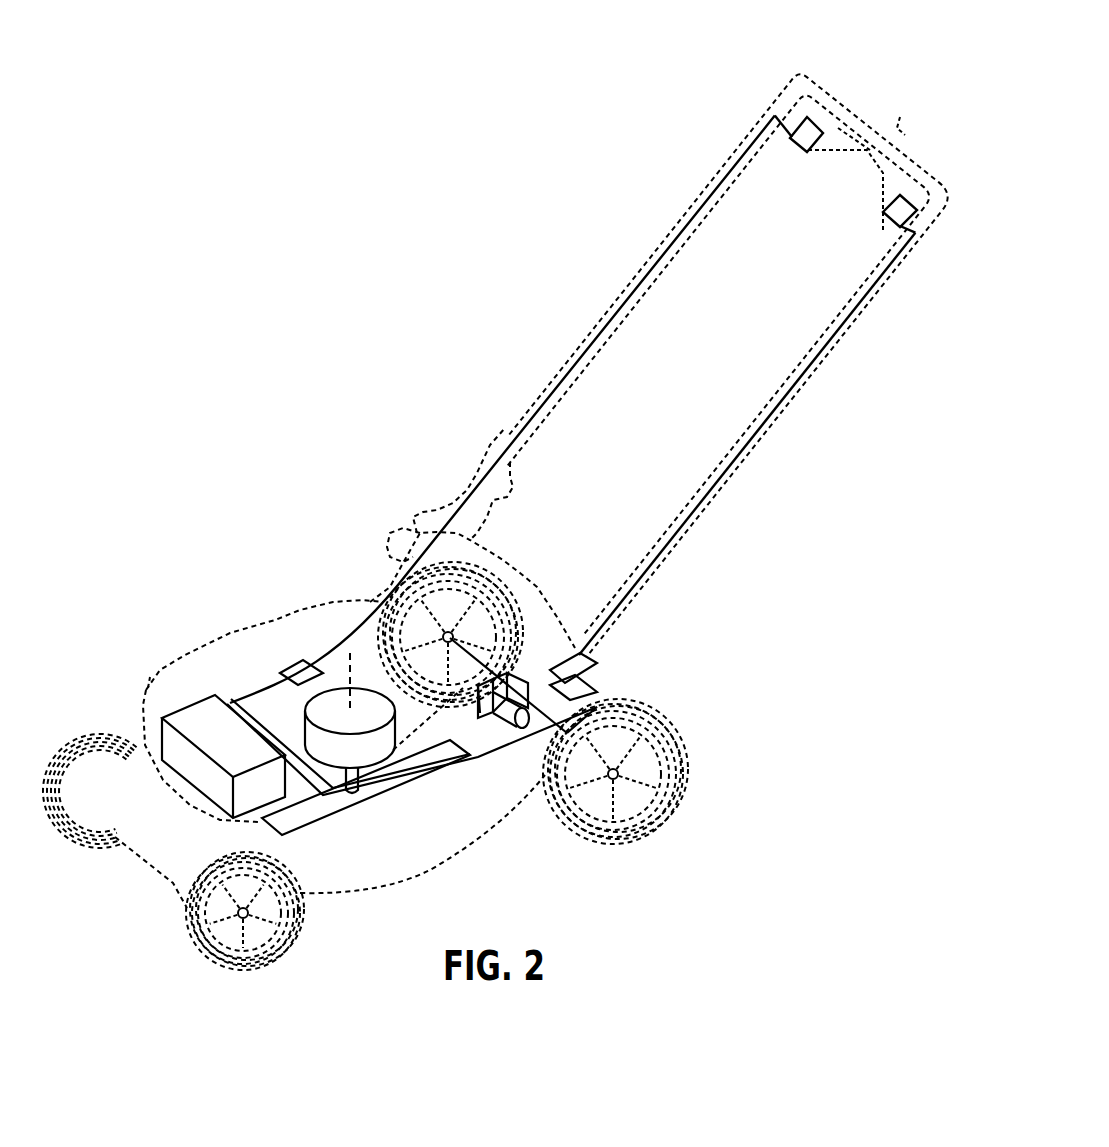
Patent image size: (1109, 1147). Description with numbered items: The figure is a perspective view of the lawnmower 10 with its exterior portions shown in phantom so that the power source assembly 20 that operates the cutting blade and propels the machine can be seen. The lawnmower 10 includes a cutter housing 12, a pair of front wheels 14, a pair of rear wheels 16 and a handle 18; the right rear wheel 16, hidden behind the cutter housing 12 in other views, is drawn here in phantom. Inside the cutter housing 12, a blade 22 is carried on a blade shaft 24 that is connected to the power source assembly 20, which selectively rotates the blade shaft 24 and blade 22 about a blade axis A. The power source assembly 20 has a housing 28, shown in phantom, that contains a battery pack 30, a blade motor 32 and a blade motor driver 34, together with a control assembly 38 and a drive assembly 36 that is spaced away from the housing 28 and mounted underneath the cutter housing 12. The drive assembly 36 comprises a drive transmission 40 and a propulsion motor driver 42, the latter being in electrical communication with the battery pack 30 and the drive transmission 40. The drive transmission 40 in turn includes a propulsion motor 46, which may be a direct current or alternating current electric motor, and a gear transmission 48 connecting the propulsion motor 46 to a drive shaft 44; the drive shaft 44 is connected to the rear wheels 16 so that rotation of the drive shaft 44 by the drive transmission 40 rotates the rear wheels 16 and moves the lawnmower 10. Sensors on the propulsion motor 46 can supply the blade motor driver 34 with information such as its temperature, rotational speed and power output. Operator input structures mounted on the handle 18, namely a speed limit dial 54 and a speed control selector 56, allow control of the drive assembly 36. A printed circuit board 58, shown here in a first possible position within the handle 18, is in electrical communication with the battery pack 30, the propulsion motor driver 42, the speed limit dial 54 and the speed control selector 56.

The lawnmower 10 is at (880, 80).
The cutter housing 12 is at (440, 870).
The front wheels 14 is at (272, 960).
The rear wheels 16 is at (480, 540).
The handle 18 is at (813, 375).
The power source assembly 20 is at (275, 618).
The blade 22 is at (315, 820).
The blade shaft 24 is at (360, 787).
The housing 28 is at (150, 677).
The battery pack 30 is at (193, 713).
The blade motor 32 is at (325, 717).
The blade motor driver 34 is at (298, 665).
The drive assembly 36 is at (598, 664).
The control assembly 38 is at (803, 150).
The drive transmission 40 is at (557, 620).
The propulsion motor driver 42 is at (587, 678).
The drive shaft 44 is at (522, 680).
The propulsion motor 46 is at (520, 725).
The gear transmission 48 is at (510, 692).
The speed limit dial 54 is at (900, 117).
The speed control selector 56 is at (828, 87).
The printed circuit board 58 is at (885, 227).
The blade axis A is at (350, 653).